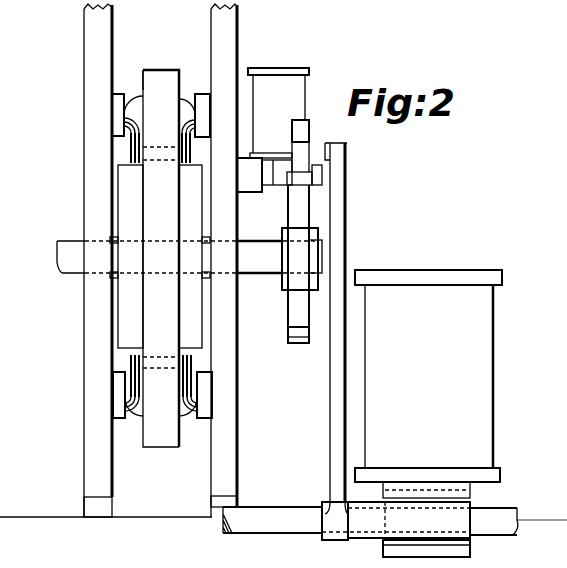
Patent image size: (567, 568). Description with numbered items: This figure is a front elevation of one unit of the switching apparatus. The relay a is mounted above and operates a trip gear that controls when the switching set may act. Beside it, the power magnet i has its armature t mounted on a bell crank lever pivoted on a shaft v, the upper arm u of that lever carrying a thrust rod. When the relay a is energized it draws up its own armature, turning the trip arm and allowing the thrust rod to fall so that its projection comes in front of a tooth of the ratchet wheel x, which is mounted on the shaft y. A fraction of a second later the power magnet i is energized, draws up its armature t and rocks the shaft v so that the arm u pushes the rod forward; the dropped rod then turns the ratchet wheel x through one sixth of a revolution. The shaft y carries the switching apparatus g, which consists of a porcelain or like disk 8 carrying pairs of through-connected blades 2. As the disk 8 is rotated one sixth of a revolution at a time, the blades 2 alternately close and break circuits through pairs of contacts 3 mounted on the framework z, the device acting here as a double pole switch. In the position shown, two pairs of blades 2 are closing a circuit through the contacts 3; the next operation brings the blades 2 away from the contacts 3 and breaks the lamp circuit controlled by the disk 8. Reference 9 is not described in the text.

The blades 2 is at (185, 122).
The contacts 3 is at (200, 113).
The switch disk 8 is at (160, 79).
The spool flange 9 is at (152, 68).
The relay a is at (296, 90).
The switching apparatus g is at (161, 248).
The power magnet i is at (480, 395).
The armature t is at (468, 551).
The upper arm u is at (328, 430).
The shaft v is at (272, 527).
The ratchet wheel x is at (300, 335).
The shaft y is at (73, 265).
The framework z is at (90, 463).